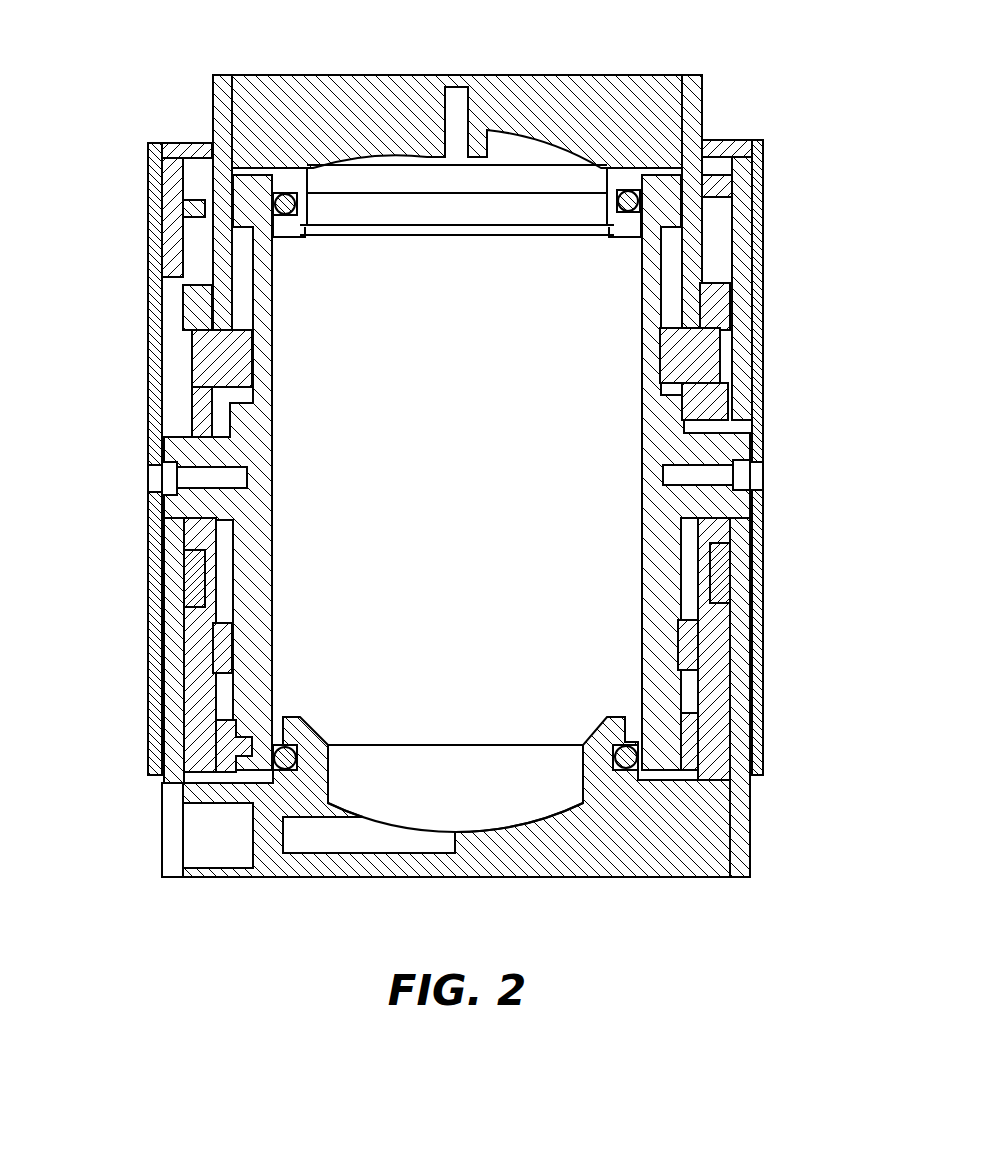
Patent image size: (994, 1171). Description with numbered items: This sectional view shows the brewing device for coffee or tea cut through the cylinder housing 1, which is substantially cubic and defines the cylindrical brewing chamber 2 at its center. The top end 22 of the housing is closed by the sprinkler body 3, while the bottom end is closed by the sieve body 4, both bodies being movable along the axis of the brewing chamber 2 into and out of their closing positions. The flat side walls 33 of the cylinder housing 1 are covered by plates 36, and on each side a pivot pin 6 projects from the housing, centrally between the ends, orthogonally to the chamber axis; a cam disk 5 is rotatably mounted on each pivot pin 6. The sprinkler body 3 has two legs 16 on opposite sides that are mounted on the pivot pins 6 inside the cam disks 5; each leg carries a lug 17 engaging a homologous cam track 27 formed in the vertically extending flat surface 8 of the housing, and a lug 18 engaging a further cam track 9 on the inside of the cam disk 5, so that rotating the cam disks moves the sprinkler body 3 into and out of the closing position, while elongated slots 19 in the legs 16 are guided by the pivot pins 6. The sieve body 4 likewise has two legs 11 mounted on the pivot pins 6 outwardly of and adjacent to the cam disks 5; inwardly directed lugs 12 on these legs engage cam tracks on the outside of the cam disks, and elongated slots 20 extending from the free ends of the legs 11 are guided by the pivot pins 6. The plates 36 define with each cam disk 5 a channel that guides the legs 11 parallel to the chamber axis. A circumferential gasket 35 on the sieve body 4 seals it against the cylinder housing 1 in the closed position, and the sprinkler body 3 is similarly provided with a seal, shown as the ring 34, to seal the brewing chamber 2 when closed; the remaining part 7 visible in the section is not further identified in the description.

The cylinder housing 1 is at (670, 410).
The cylindrical brewing chamber 2 is at (638, 418).
The sprinkler body 3 is at (606, 90).
The sieve body 4 is at (712, 853).
The cam disks 5 is at (193, 423).
The pivot pins 6 is at (190, 503).
The outer ring 7 is at (180, 165).
The flat surfaces 8 is at (160, 452).
The further cam tracks 9 is at (198, 338).
The legs of sieve body 11 is at (172, 692).
The inwardly directed lugs 12 is at (188, 567).
The legs of sprinkler body 16 is at (215, 115).
The lug 17 is at (247, 355).
The lug 18 is at (193, 262).
The elongated slots 19 is at (220, 652).
The elongated slots 20 is at (170, 365).
The top end 22 is at (735, 142).
The homologous cam tracks 27 is at (202, 238).
The flat side walls 33 is at (745, 155).
The upper O-ring 34 is at (275, 200).
The gasket 35 is at (295, 772).
The plates 36 is at (152, 758).